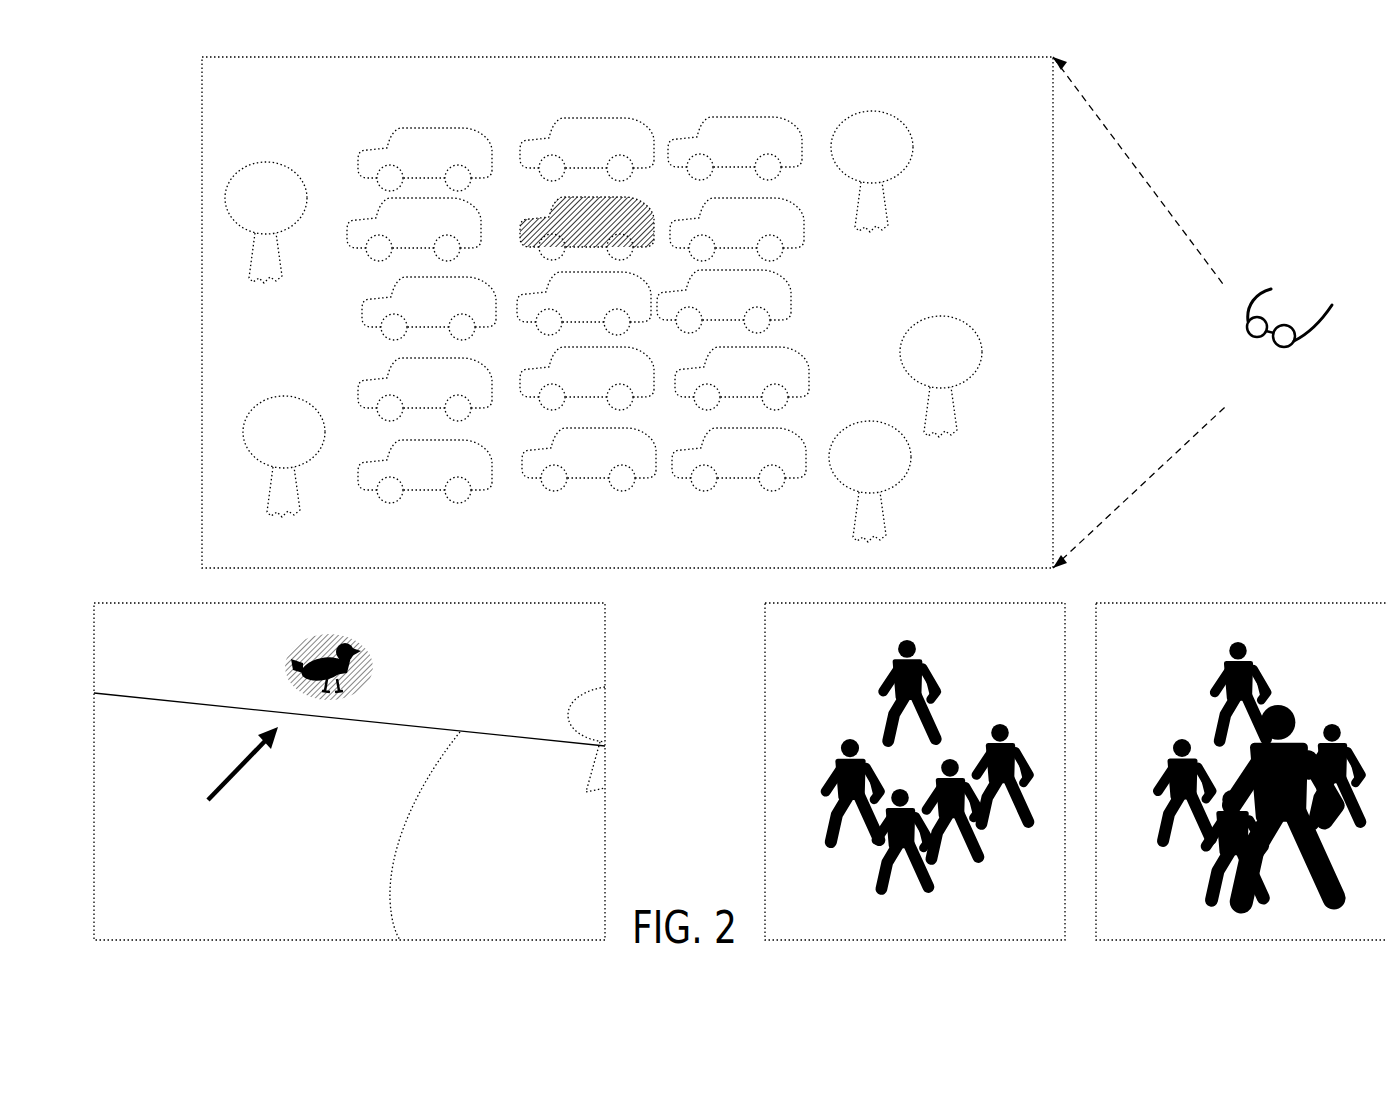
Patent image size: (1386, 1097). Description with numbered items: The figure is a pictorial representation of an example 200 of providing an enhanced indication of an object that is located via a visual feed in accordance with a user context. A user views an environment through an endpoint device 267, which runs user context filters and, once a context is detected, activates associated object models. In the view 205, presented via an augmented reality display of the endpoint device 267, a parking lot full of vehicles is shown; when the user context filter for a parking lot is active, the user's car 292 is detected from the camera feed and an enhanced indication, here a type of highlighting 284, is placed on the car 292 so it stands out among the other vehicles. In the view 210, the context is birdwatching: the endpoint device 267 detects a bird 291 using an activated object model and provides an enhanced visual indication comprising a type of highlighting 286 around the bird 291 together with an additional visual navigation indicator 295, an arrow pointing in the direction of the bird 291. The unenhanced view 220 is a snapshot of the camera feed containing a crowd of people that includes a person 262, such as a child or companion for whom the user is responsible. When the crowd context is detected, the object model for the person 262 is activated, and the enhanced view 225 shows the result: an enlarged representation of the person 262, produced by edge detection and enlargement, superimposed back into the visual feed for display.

The example 200 is at (92, 93).
The view 205 is at (272, 101).
The view 210 is at (157, 655).
The unenhanced view 220 is at (827, 648).
The enhanced view 225 is at (1158, 648).
The person 262 is at (973, 864).
The endpoint device 267 is at (1259, 346).
The highlighting 284 is at (648, 172).
The highlighting 286 is at (283, 665).
The bird 291 is at (373, 673).
The car 292 is at (516, 205).
The visual navigation indicator 295 is at (205, 790).